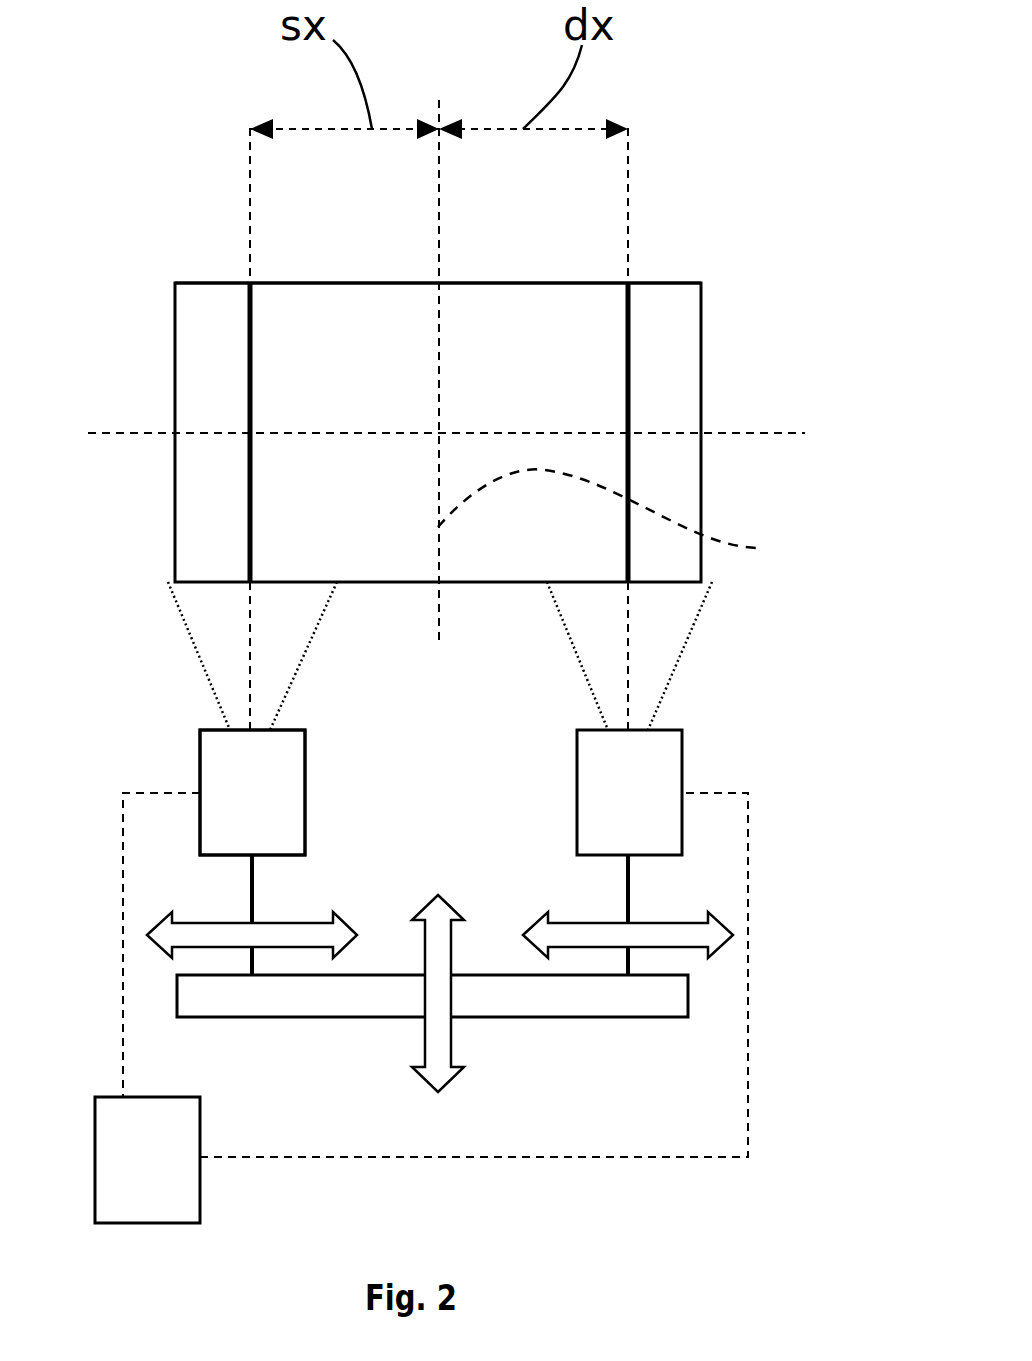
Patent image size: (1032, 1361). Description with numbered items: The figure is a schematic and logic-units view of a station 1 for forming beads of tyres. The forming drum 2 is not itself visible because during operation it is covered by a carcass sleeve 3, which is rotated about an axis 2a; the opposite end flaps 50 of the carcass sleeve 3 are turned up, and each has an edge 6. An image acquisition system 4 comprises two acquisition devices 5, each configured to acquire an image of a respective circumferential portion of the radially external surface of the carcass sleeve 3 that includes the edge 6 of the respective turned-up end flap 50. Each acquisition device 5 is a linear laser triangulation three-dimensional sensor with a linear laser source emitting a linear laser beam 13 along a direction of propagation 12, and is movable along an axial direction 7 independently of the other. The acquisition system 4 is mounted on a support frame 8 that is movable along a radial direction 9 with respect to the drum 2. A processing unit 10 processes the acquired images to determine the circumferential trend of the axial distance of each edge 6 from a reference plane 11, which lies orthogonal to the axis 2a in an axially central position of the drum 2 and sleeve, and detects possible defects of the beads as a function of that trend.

The station 1 is at (672, 1165).
The forming drum 2 is at (310, 283).
The axis 2a is at (758, 478).
The carcass sleeve 3 is at (514, 280).
The image acquisition system 4 is at (150, 707).
The acquisition device 5 is at (268, 822).
The edge 6 is at (250, 317).
The axial direction 7 is at (582, 930).
The support frame 8 is at (392, 993).
The radial direction 9 is at (440, 1013).
The processing unit 10 is at (176, 1186).
The reference plane 11 is at (629, 521).
The direction of propagation 12 is at (627, 630).
The linear laser beam 13 is at (187, 623).
The end flaps 50 is at (247, 417).